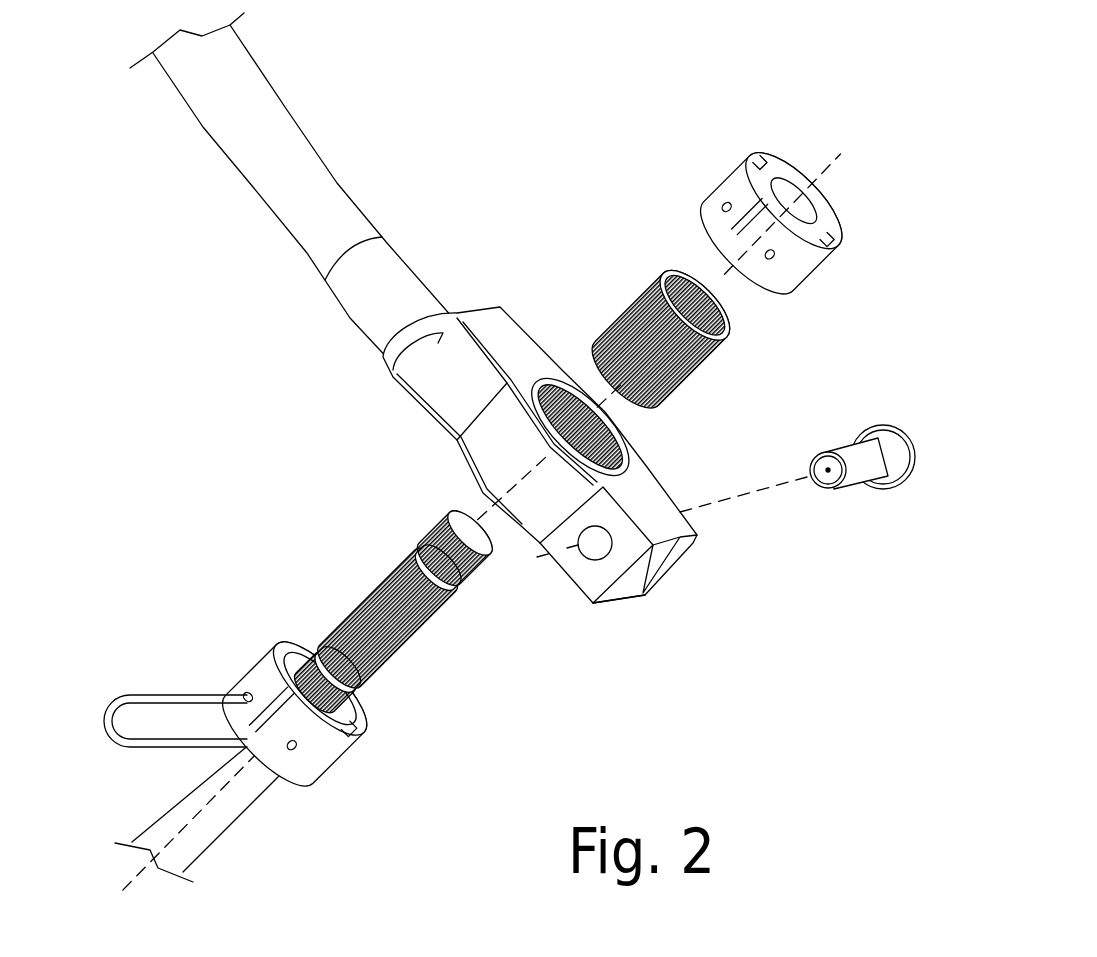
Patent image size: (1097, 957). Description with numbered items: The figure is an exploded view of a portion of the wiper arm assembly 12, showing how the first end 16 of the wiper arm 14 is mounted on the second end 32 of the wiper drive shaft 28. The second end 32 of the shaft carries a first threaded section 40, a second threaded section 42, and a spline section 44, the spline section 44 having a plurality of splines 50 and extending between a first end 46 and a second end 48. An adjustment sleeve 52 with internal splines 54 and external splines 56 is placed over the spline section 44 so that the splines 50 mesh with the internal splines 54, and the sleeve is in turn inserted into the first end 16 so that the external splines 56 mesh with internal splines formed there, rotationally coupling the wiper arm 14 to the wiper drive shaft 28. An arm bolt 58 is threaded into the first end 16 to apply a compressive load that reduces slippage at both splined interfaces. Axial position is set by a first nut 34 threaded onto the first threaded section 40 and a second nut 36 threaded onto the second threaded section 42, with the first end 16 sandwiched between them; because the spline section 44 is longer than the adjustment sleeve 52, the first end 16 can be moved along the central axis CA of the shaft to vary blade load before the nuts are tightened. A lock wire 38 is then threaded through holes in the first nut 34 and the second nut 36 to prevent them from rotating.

The wiper arm assembly 12 is at (188, 352).
The wiper arm 14 is at (328, 128).
The first end 16 is at (720, 478).
The wiper drive shaft 28 is at (240, 823).
The second end 32 is at (337, 573).
The first nut 34 is at (252, 645).
The second nut 36 is at (720, 140).
The lock wire 38 is at (153, 675).
The first threaded section 40 is at (372, 697).
The second threaded section 42 is at (495, 568).
The spline section 44 is at (437, 630).
The first end 46 is at (405, 663).
The second end 48 is at (462, 607).
The splines 50 is at (377, 572).
The adjustment sleeve 52 is at (630, 268).
The internal splines 54 is at (695, 283).
The external splines 56 is at (595, 322).
The arm bolt 58 is at (913, 430).
The central axis CA is at (137, 877).